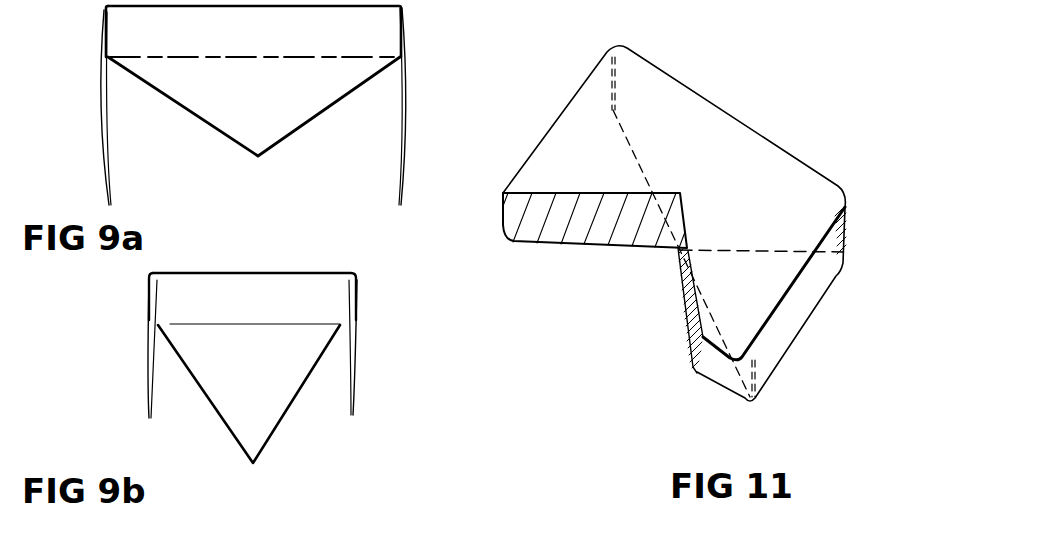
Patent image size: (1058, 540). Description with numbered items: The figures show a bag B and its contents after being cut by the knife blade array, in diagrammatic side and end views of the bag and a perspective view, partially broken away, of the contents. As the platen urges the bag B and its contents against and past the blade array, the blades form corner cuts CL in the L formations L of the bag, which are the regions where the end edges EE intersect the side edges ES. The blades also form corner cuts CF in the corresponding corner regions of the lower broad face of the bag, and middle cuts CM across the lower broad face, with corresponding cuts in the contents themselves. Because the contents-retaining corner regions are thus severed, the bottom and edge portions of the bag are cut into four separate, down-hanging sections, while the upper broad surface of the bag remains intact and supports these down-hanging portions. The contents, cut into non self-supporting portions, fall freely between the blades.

In FIG. 9A, the corner cuts in the L formations CL is at (433, 37).
In FIG. 9B, the corner cuts in the L formations CL is at (395, 303).
In FIG. 11, the corner cuts in the L formations CL is at (620, 80).
In FIG. 11, the corner cuts in the lower broad face CF is at (795, 364).
In FIG. 11, the middle cuts CM is at (655, 193).
In FIG. 11, the bag B is at (738, 128).
In FIG. 11, the L formations L is at (642, 41).
In FIG. 11, the end edges EE is at (760, 364).
In FIG. 11, the side edges ES is at (730, 377).